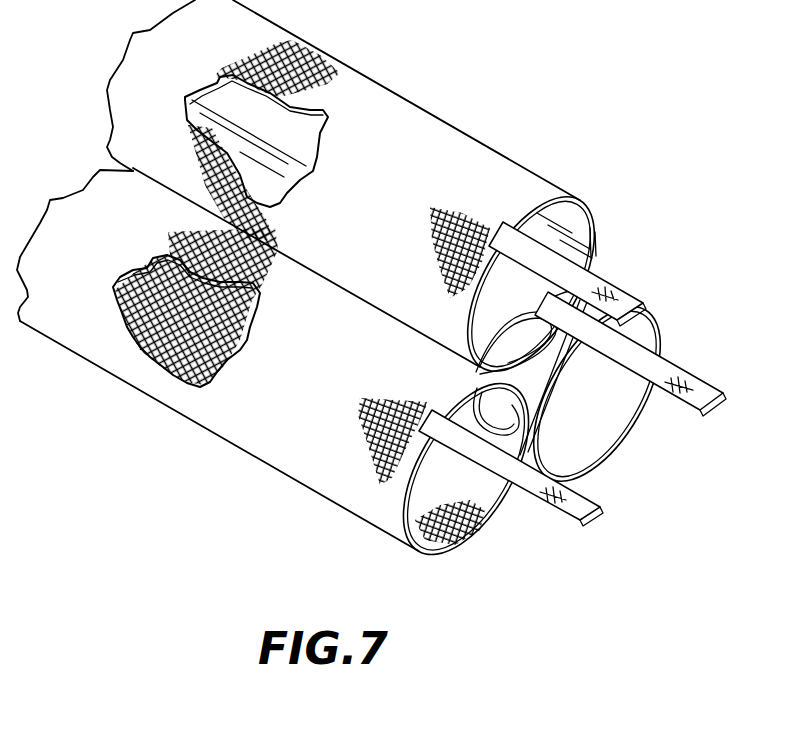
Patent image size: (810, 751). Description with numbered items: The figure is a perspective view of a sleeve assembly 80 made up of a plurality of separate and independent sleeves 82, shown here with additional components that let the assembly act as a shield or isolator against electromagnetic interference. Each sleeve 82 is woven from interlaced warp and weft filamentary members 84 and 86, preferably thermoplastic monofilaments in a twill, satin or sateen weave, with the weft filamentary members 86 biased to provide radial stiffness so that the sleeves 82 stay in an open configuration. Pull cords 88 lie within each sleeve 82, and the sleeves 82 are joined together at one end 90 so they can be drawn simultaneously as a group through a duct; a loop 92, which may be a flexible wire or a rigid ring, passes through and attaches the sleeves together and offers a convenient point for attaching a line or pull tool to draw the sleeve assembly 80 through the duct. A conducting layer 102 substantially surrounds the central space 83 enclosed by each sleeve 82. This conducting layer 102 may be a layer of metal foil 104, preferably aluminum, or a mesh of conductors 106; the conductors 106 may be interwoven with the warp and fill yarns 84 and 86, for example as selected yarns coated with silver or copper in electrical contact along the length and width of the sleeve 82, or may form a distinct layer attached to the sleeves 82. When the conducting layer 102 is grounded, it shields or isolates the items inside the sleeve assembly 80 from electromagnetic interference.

The sleeve assembly 80 is at (568, 146).
The sleeve 82 is at (387, 117).
The central space 83 is at (600, 265).
The warp filamentary members 84 is at (432, 204).
The weft filamentary members 86 is at (441, 212).
The pull cord 88 is at (700, 390).
The end 90 is at (540, 448).
The loop 92 is at (558, 380).
The conducting layer 102 is at (187, 97).
The metal foil 104 is at (337, 70).
The mesh of conductors 106 is at (217, 360).